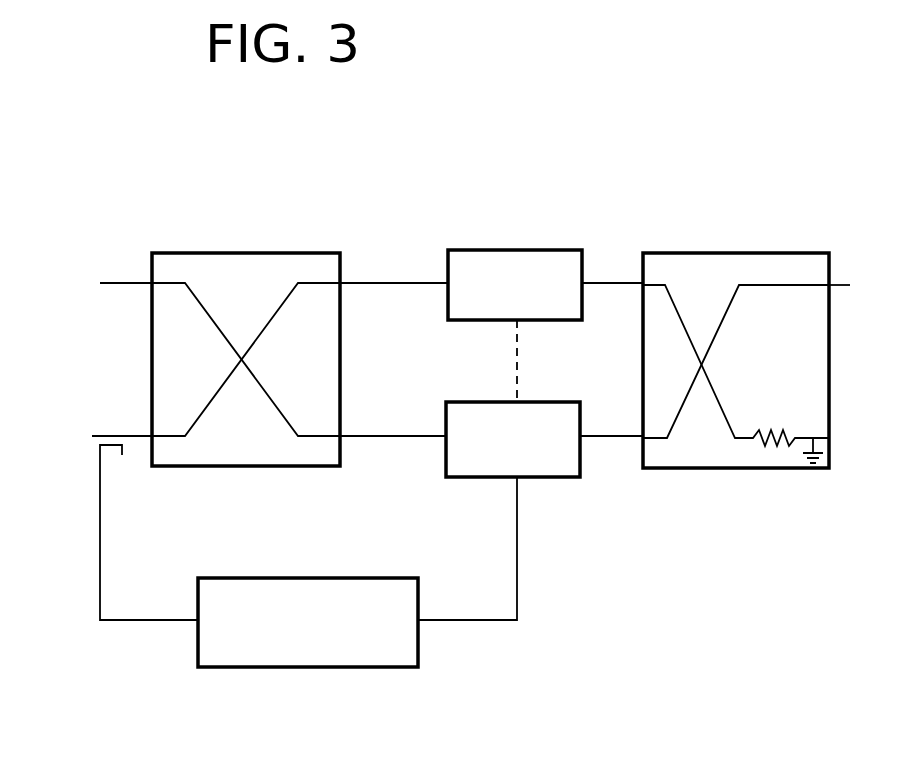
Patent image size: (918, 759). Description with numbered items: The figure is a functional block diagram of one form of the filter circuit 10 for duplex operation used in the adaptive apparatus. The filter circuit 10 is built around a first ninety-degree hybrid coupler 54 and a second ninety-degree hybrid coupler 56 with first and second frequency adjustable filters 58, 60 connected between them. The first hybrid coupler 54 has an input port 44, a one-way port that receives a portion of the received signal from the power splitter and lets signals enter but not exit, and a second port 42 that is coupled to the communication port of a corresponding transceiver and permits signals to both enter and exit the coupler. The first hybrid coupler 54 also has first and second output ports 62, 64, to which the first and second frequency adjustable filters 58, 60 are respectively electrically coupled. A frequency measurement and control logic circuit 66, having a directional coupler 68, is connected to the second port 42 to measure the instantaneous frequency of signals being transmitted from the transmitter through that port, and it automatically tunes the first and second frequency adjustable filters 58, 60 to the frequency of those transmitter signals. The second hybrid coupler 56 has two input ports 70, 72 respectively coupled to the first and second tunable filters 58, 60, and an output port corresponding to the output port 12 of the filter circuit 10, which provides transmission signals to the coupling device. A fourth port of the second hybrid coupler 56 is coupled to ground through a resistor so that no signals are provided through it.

The filter circuit 10 is at (622, 610).
The output port 12 is at (829, 285).
The second port 42 is at (152, 436).
The input port 44 is at (152, 283).
The 90° hybrid coupler 54 is at (242, 253).
The second 90° hybrid coupler 56 is at (733, 253).
The first frequency adjustable filter 58 is at (512, 250).
The second frequency adjustable filter 60 is at (477, 402).
The first output port 62 is at (340, 283).
The second output port 64 is at (340, 437).
The frequency measurement and control logic circuit 66 is at (381, 667).
The directional coupler 68 is at (113, 447).
The input port 70 is at (643, 283).
The input port 72 is at (641, 437).